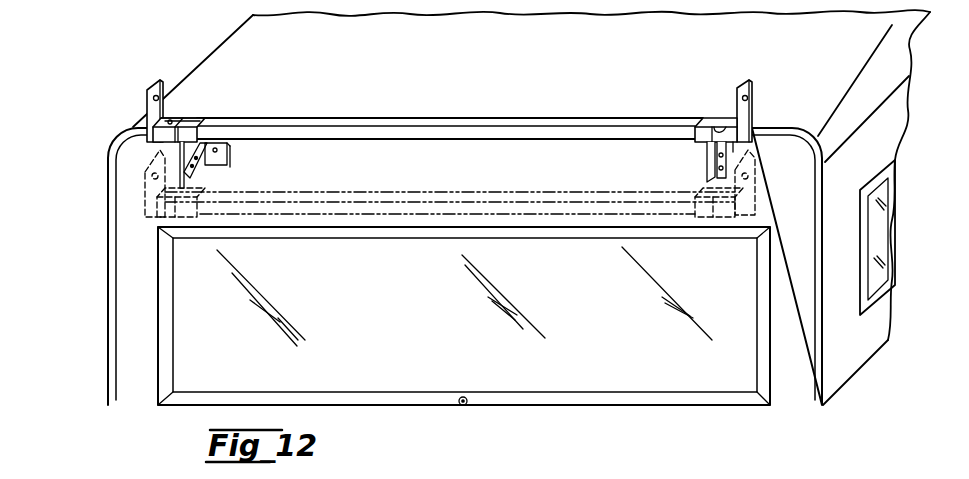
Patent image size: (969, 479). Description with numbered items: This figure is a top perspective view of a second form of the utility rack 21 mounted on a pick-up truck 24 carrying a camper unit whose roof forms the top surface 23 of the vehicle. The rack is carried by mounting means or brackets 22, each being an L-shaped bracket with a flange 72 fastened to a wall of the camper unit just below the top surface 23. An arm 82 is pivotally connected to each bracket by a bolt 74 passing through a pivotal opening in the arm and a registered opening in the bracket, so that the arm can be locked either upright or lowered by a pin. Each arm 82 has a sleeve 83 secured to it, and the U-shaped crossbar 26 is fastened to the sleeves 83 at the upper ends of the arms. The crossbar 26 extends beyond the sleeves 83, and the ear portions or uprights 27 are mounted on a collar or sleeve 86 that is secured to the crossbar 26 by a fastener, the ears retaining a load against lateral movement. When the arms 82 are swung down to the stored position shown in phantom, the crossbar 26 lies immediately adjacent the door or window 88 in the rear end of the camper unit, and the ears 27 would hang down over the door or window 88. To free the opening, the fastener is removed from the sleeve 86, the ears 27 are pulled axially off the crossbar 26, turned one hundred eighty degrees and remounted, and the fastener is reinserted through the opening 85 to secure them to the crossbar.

The utility rack 21 is at (105, 129).
The mounting means or brackets 22 is at (213, 163).
The top surface 23 is at (540, 93).
The pick-up truck 24 is at (108, 280).
The crossbar 26 is at (345, 118).
The ear portions or uprights 27 is at (146, 89).
The flange 72 is at (227, 146).
The bolt 74 is at (198, 186).
The arm 82 is at (740, 158).
The sleeve 83 is at (185, 130).
The opening 85 is at (186, 118).
The collar or sleeve 86 is at (707, 124).
The door or window 88 is at (400, 228).